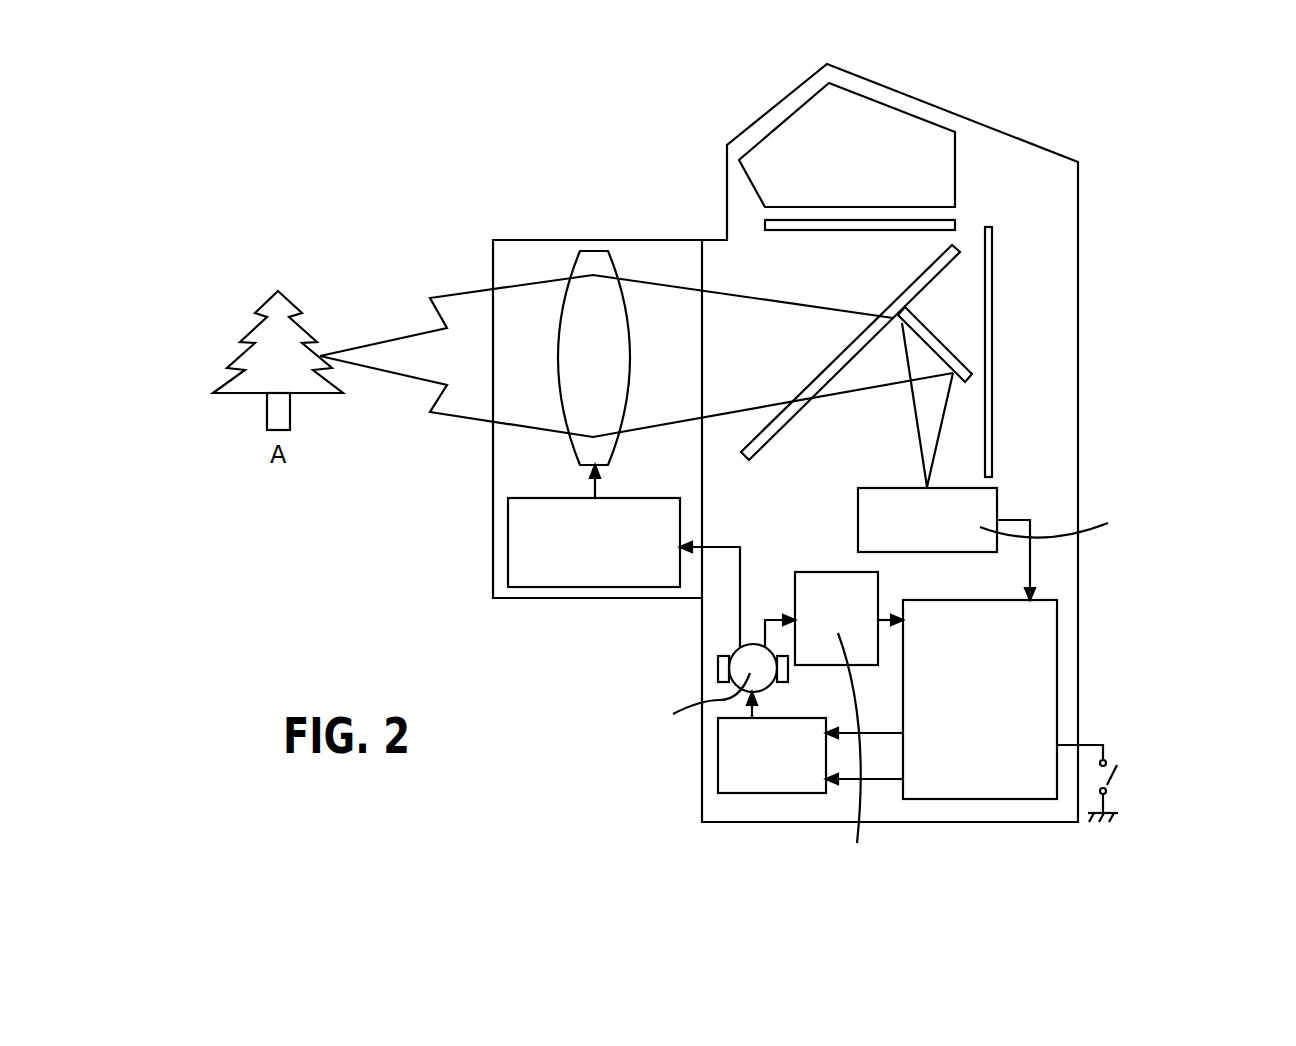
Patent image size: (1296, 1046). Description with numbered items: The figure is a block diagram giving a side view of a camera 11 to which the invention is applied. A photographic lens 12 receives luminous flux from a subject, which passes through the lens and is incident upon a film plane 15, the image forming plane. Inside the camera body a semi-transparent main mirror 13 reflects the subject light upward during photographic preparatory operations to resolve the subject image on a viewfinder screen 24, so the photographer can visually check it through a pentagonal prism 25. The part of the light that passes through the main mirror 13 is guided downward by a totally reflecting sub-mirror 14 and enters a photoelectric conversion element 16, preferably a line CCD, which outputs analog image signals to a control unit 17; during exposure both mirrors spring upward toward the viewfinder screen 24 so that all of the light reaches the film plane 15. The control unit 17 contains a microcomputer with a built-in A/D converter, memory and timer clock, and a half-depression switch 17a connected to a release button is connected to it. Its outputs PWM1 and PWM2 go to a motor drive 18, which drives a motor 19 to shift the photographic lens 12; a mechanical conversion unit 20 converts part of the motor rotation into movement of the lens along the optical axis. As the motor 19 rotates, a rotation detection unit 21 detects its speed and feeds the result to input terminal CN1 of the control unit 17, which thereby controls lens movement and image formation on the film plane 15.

The camera 11 is at (992, 822).
The photographic lens 12 is at (600, 250).
The main mirror 13 is at (923, 270).
The sub-mirror 14 is at (938, 336).
The film plane 15 is at (992, 238).
The photoelectric conversion element 16 is at (997, 498).
The control unit 17 is at (1057, 627).
The half-depression switch 17a is at (1105, 748).
The motor drive 18 is at (783, 793).
The motor 19 is at (718, 661).
The mechanical conversion unit 20 is at (547, 587).
The rotation detection unit 21 is at (795, 588).
The viewfinder screen 24 is at (955, 227).
The pentagonal prism 25 is at (923, 120).